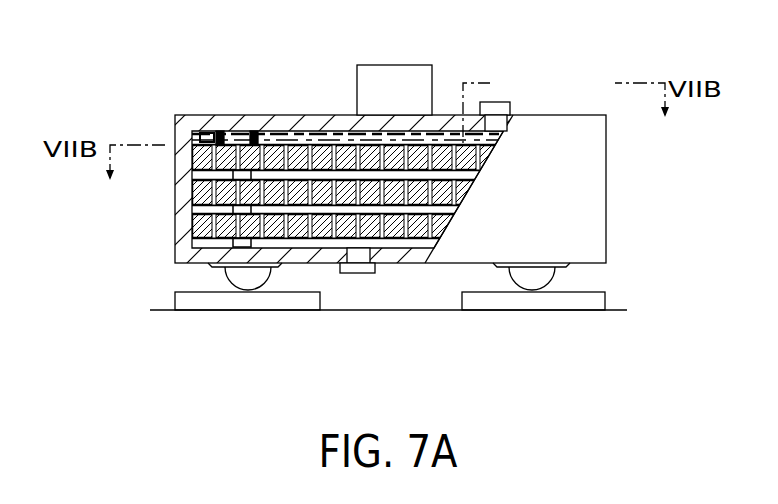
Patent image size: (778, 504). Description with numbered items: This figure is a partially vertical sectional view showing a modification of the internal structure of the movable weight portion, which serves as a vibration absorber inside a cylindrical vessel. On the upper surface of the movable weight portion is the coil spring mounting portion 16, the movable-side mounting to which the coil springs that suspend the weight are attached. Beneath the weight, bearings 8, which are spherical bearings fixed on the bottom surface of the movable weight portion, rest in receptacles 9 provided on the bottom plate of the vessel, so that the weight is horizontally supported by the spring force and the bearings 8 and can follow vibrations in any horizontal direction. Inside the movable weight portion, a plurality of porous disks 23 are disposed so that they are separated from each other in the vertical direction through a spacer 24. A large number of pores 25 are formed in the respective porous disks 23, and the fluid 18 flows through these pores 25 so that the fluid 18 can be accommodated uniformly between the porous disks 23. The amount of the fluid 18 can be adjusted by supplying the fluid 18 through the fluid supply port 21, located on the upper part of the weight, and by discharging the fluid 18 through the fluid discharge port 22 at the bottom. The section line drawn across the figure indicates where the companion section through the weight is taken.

The bearings 8 is at (517, 277).
The receptacles 9 is at (575, 303).
The coil spring mounting portion 16 is at (422, 65).
The fluid 18 is at (320, 133).
The fluid supply port 21 is at (507, 102).
The fluid discharge port 22 is at (365, 273).
The porous disks 23 is at (218, 133).
The spacer 24 is at (233, 243).
The pores 25 is at (266, 133).